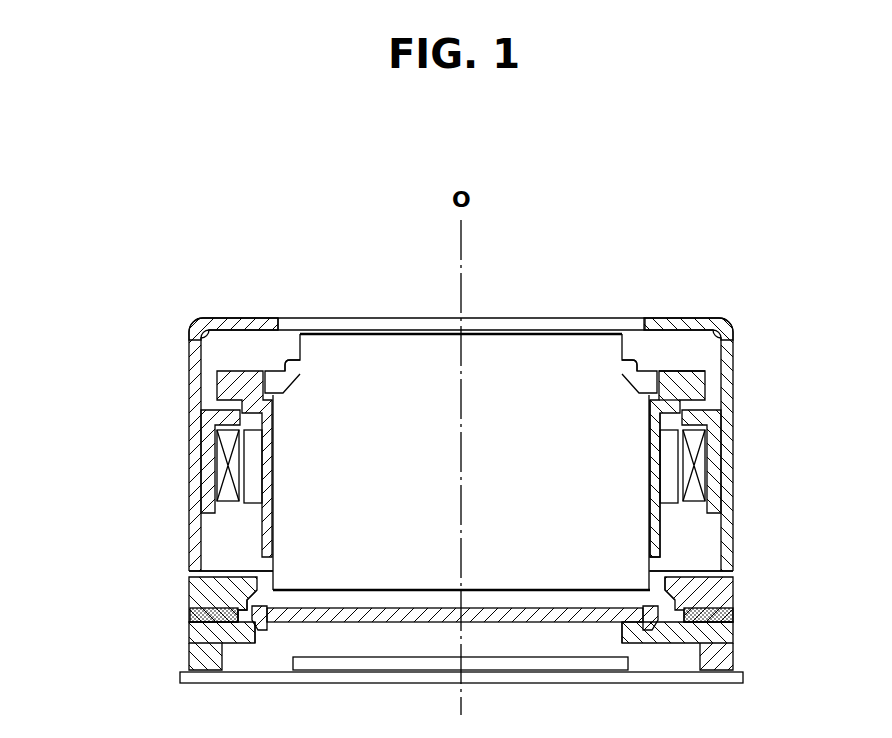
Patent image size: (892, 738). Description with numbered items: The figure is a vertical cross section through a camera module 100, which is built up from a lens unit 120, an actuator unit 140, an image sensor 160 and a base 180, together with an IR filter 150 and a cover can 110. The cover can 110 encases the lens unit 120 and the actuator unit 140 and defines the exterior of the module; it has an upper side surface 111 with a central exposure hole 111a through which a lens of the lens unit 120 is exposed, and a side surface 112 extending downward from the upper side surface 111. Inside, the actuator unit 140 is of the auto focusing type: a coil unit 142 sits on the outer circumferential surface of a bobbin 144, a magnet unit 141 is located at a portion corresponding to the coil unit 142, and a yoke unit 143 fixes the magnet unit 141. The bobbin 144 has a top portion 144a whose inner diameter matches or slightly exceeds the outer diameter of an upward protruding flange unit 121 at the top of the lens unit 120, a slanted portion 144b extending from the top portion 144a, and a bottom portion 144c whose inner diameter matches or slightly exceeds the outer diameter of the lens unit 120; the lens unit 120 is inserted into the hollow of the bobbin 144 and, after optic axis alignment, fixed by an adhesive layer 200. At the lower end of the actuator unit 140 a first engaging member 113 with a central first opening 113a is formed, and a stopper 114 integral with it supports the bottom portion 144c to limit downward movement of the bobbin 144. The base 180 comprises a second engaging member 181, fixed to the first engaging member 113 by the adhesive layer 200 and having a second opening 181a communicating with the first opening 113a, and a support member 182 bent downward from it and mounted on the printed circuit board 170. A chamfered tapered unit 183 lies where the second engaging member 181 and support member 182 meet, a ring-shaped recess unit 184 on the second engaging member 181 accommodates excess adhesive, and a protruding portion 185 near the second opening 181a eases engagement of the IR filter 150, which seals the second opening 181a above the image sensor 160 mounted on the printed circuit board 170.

The camera module 100 is at (102, 186).
The cover can 110 is at (196, 323).
The upper side surface 111 is at (218, 318).
The exposure hole 111a is at (590, 325).
The side surface 112 is at (737, 428).
The first engaging member 113 is at (200, 585).
The first opening 113a is at (662, 580).
The stopper 114 is at (195, 571).
The lens unit 120 is at (522, 362).
The flange unit 121 is at (278, 398).
The actuator unit 140 is at (122, 395).
The magnet unit 141 is at (228, 462).
The coil unit 142 is at (256, 488).
The yoke unit 143 is at (218, 436).
The bobbin 144 is at (238, 388).
The top portion 144a is at (673, 378).
The slanted portion 144b is at (660, 393).
The bottom portion 144c is at (663, 493).
The IR filter 150 is at (535, 622).
The image sensor 160 is at (620, 670).
The printed circuit board 170 is at (727, 684).
The base 180 is at (105, 582).
The second engaging member 181 is at (192, 618).
The second opening 181a is at (330, 636).
The support member 182 is at (193, 665).
The tapered unit 183 is at (192, 625).
The recess unit 184 is at (252, 628).
The protruding portion 185 is at (268, 630).
The adhesive layer 200 is at (733, 613).